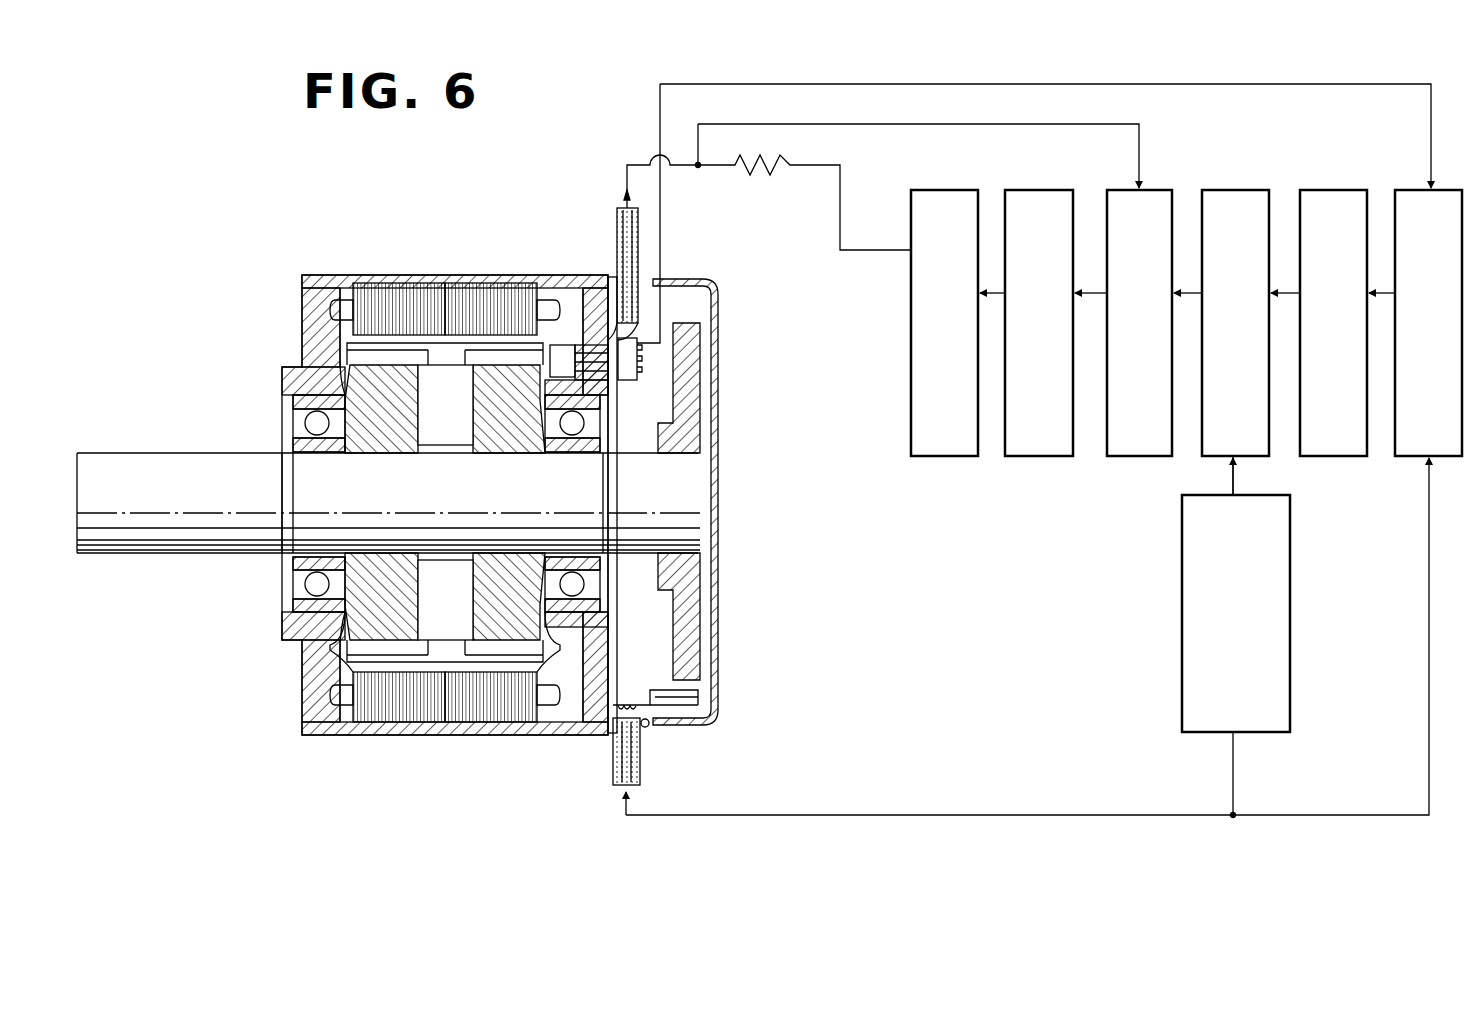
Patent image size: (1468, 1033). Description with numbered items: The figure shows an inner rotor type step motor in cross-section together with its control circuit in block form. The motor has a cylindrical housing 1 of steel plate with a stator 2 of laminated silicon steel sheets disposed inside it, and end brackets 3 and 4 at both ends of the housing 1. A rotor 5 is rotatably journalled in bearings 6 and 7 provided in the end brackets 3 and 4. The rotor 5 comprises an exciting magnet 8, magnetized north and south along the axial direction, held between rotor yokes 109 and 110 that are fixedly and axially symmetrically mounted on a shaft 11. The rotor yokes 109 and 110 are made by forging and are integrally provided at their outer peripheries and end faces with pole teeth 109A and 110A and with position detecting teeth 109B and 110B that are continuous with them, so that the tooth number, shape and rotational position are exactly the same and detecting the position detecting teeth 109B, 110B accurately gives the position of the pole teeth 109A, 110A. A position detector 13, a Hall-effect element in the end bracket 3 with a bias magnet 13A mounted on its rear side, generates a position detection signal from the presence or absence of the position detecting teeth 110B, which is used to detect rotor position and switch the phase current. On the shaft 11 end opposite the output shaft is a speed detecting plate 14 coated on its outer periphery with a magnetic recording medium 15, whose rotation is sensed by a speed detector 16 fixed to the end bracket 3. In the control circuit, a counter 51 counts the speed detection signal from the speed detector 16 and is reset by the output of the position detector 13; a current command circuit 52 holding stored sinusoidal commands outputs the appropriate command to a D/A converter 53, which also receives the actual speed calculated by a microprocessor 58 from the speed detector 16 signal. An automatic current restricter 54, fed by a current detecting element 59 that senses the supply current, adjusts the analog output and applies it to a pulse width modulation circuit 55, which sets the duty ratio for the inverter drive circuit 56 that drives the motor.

The cylindrical housing 1 is at (445, 735).
The stator 2 is at (395, 290).
The end bracket 3 is at (602, 618).
The end bracket 4 is at (302, 708).
The rotor 5 is at (305, 340).
The bearing 6 is at (602, 437).
The bearing 7 is at (300, 418).
The exciting magnet 8 is at (446, 365).
The shaft 11 is at (240, 540).
The position detector 13 is at (560, 345).
The bias magnet 13A is at (606, 337).
The speed detecting plate 14 is at (700, 355).
The magnetic recording medium 15 is at (700, 683).
The speed detector 16 is at (683, 712).
The counter 51 is at (1402, 190).
The current command circuit 52 is at (1345, 190).
The D/A converter 53 is at (1240, 190).
The automatic current restricter 54 is at (1172, 200).
The pulse width modulation circuit 55 is at (1040, 190).
The drive circuit 56 is at (942, 190).
The microprocessor 58 is at (1182, 562).
The current detecting element 59 is at (766, 178).
The rotor yoke 109 is at (388, 300).
The pole teeth 109A is at (375, 705).
The position detecting teeth 109B is at (302, 652).
The rotor yoke 110 is at (500, 300).
The pole teeth 110A is at (478, 722).
The position detecting teeth 110B is at (570, 735).